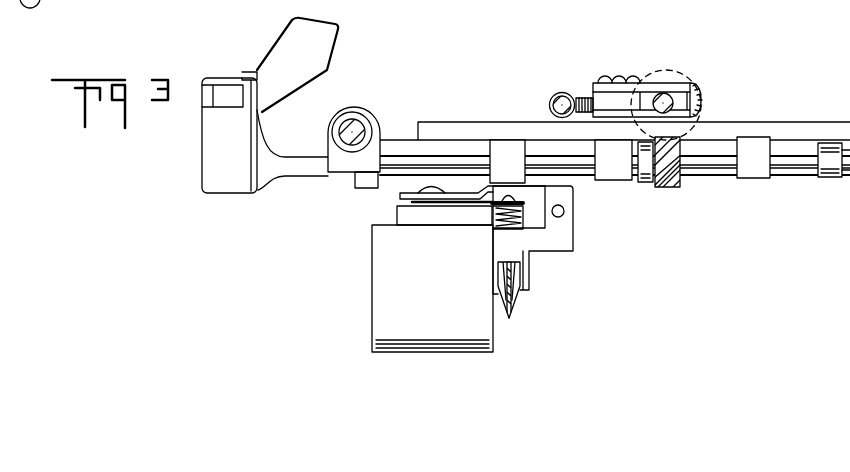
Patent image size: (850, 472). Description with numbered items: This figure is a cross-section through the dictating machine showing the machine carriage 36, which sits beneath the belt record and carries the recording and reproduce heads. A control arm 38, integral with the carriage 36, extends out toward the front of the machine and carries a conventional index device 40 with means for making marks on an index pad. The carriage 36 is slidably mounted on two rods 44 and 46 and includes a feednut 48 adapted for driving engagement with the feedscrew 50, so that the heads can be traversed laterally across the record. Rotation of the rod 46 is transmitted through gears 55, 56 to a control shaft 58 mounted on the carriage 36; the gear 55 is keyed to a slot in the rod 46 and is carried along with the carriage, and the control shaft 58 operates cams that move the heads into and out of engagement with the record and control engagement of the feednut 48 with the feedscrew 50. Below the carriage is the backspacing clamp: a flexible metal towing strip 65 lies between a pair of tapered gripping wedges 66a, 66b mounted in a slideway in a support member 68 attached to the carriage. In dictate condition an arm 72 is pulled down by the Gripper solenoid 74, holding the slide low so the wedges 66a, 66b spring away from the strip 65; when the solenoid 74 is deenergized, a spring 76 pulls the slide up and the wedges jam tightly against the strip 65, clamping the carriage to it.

The carriage 36 is at (797, 122).
The control arm 38 is at (210, 153).
The index device 40 is at (290, 43).
The rod 44 is at (338, 128).
The rod 46 is at (666, 93).
The feednut 48 is at (586, 96).
The feedscrew 50 is at (548, 96).
The gear 55 is at (696, 90).
The gear 56 is at (668, 186).
The control shaft 58 is at (800, 160).
The towing strip 65 is at (511, 316).
The gripping wedge 66a is at (503, 299).
The gripping wedge 66b is at (520, 299).
The support member 68 is at (516, 242).
The arm 72 is at (402, 194).
The Gripper solenoid 74 is at (385, 272).
The spring 76 is at (492, 218).